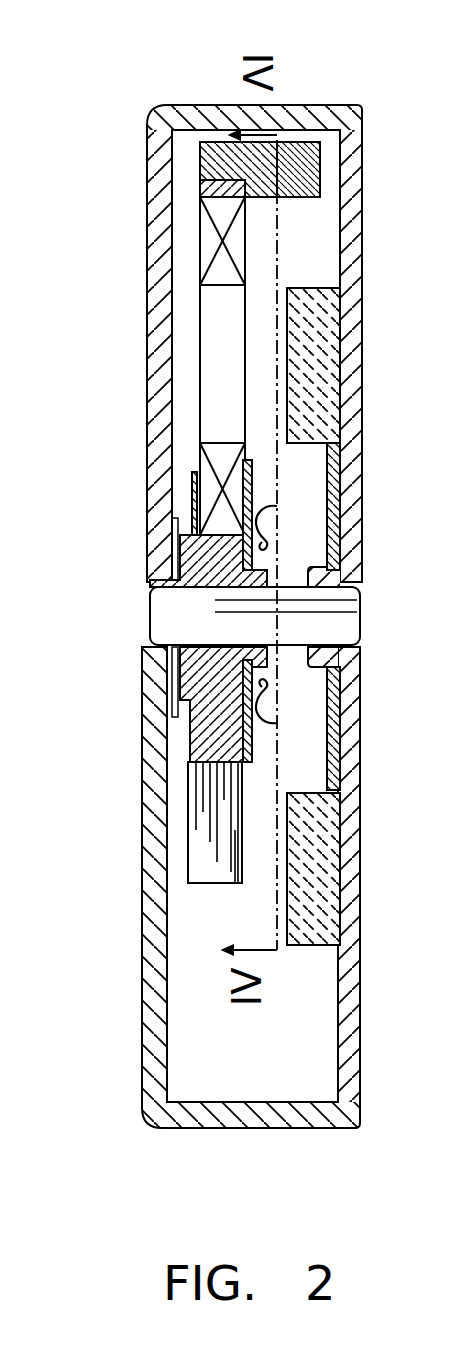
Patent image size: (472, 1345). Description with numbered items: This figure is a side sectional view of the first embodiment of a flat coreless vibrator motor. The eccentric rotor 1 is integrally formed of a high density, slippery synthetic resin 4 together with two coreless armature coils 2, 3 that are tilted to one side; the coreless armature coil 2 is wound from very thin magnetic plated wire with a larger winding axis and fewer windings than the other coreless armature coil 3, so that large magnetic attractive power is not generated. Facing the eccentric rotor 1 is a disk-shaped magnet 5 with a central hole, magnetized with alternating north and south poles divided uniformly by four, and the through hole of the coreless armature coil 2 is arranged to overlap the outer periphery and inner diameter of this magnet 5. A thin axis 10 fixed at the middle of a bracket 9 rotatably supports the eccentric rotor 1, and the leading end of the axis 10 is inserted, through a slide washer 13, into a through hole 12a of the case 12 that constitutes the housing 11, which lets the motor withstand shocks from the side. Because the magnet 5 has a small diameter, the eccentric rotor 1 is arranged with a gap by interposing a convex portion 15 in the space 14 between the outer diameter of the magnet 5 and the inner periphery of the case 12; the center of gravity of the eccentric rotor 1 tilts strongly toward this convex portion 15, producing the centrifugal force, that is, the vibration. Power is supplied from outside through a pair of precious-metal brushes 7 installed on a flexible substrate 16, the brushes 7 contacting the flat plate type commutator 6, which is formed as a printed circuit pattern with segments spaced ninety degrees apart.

The eccentric rotor 1 is at (185, 315).
The coreless armature coil 2 is at (207, 237).
The coreless armature coil 3 is at (202, 845).
The synthetic resin 4 is at (215, 142).
The magnet 5 is at (317, 350).
The flat plate type commutator 6 is at (247, 745).
The brushes 7 is at (277, 510).
The bracket 9 is at (350, 388).
The axis 10 is at (165, 618).
The housing 11 is at (145, 360).
The case 12 is at (153, 750).
The through hole 12a is at (145, 643).
The slide washer 13 is at (147, 517).
The space 14 is at (313, 245).
The convex portion 15 is at (310, 140).
The flexible substrate 16 is at (330, 477).